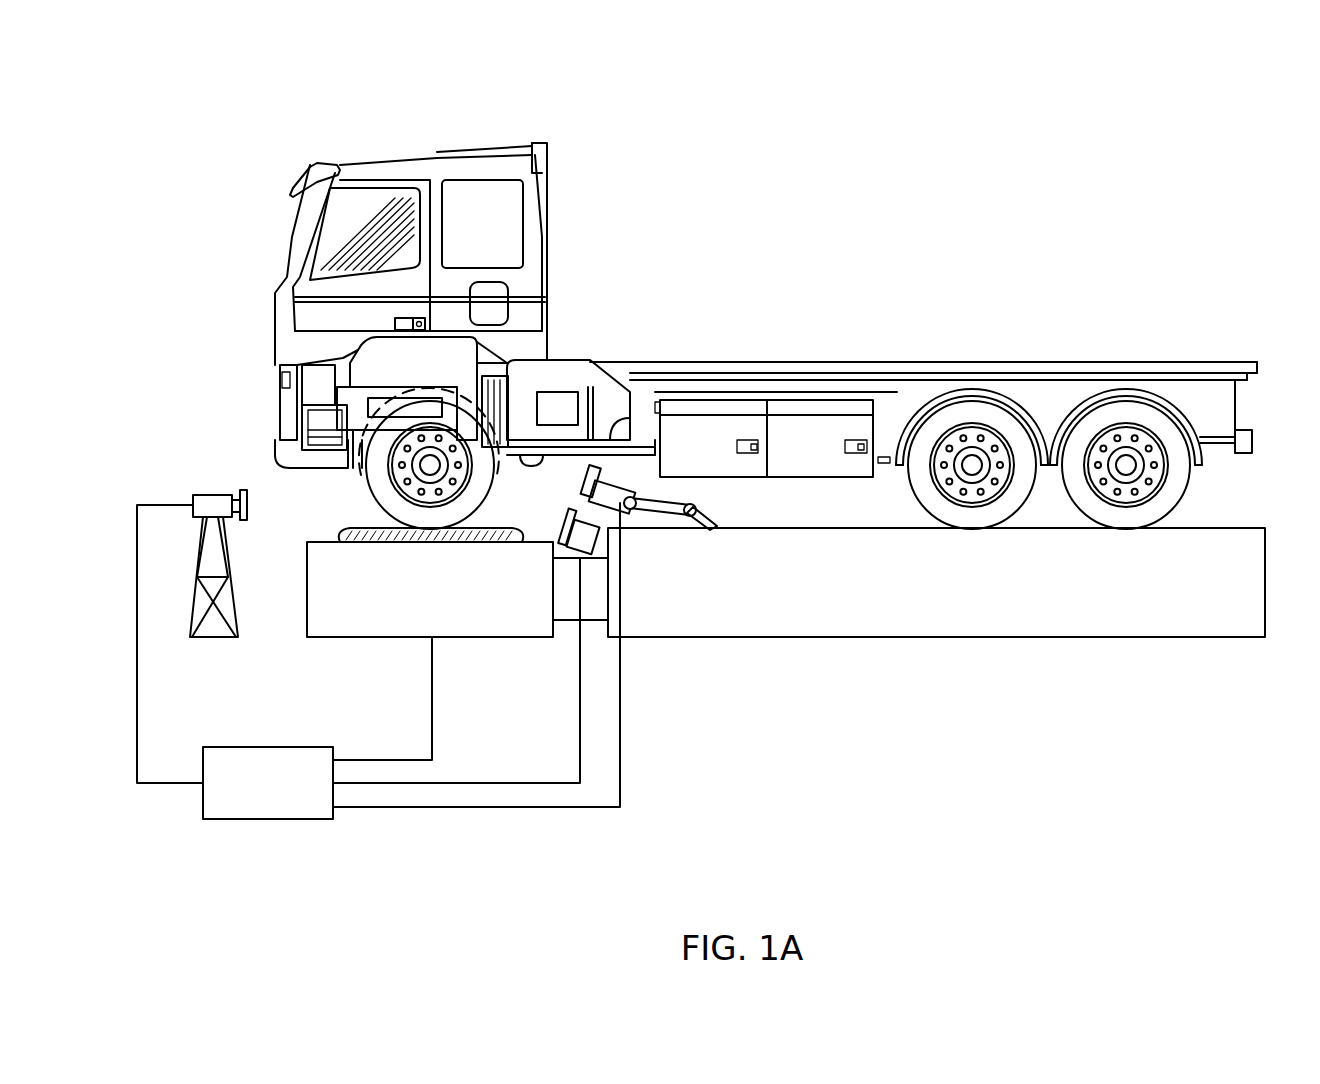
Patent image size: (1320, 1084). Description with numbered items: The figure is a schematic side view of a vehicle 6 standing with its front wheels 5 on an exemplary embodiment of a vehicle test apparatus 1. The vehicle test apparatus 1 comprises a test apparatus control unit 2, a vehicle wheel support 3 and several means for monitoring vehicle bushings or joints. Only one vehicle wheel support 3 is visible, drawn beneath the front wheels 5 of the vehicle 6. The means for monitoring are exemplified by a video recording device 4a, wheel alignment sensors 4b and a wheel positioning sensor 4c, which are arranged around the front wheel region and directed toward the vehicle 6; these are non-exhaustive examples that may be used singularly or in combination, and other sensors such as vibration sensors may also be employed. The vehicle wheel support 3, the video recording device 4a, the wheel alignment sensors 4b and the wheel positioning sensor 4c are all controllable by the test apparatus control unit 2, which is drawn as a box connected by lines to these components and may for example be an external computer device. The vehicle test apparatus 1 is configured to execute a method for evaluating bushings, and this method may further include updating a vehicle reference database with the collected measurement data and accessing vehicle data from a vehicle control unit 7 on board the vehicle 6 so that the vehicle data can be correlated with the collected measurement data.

The vehicle test apparatus 1 is at (701, 603).
The test apparatus control unit 2 is at (275, 802).
The vehicle wheel support 3 is at (363, 528).
The video recording device 4a is at (613, 497).
The wheel alignment sensors 4b is at (210, 495).
The wheel positioning sensor 4c is at (593, 540).
The front wheels 5 is at (487, 485).
The vehicle 6 is at (753, 285).
The vehicle control unit 7 is at (487, 305).